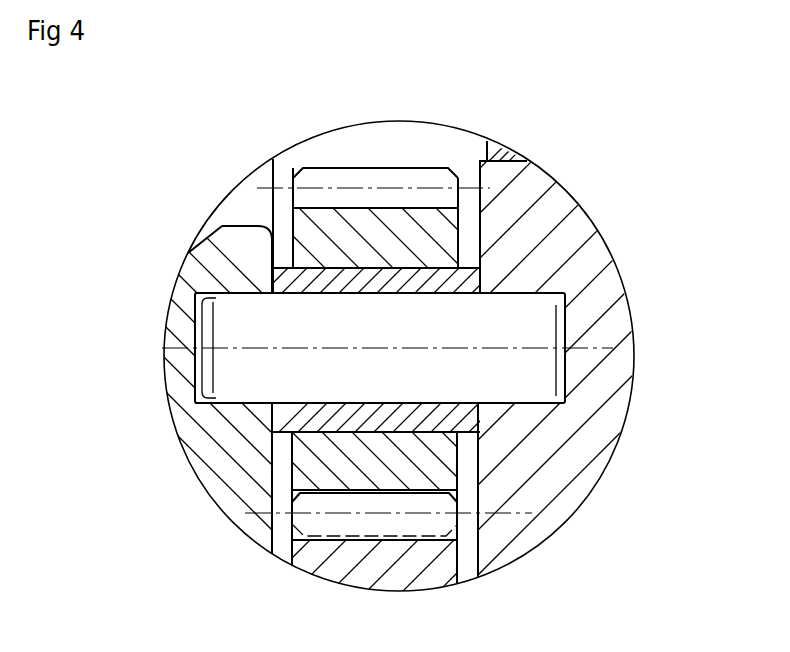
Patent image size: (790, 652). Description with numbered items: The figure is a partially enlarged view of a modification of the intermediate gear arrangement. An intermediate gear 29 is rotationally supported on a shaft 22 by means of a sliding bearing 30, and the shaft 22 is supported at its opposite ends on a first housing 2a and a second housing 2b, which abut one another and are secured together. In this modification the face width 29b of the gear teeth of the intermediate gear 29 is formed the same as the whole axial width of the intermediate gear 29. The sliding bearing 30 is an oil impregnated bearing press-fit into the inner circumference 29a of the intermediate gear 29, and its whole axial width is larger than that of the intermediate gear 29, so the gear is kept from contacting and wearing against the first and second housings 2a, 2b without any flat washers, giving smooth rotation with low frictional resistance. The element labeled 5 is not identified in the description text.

The first housing 2a is at (219, 257).
The second housing 2b is at (557, 250).
The motor housing 5 is at (417, 568).
The shaft 22 is at (218, 357).
The intermediate gear 29 is at (388, 355).
The inner circumference 29a is at (289, 283).
The face width 29b is at (358, 180).
The sliding bearing 30 is at (445, 424).